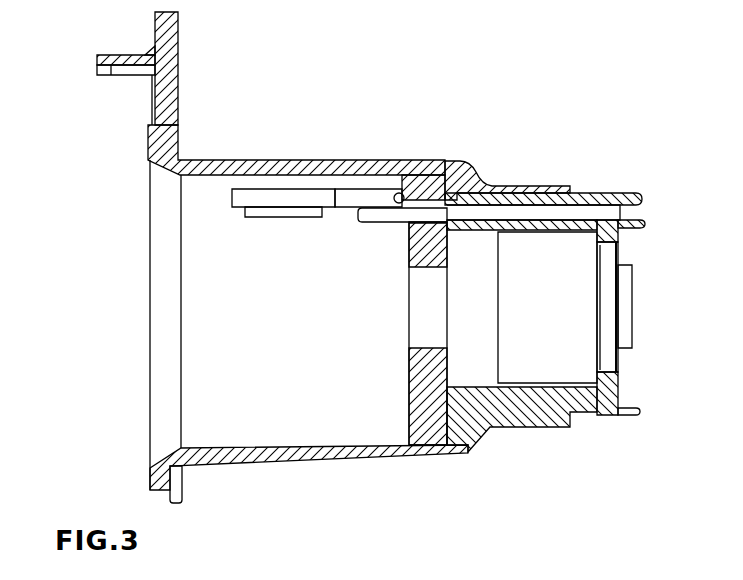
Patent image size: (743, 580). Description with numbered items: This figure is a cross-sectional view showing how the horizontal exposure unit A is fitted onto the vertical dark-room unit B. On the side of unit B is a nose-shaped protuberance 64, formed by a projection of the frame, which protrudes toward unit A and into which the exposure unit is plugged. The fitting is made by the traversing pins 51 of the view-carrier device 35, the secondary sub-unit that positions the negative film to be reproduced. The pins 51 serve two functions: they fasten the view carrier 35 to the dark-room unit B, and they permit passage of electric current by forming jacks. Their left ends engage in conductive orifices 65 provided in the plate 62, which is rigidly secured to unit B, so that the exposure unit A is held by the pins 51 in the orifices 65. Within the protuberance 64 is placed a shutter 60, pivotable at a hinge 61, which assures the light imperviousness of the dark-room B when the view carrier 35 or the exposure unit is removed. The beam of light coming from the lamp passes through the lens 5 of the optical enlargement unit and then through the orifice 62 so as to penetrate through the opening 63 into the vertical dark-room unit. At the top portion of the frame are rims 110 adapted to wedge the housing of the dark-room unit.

The rims 110 is at (178, 33).
The second unit B is at (170, 107).
The nose-shaped protuberance 64 is at (229, 172).
The shutter 60 is at (305, 197).
The hinge 61 is at (400, 193).
The conductive orifices 65 is at (447, 162).
The traversing pins 51 is at (590, 212).
The first unit A is at (630, 200).
The lens 5 is at (624, 299).
The opening 63 is at (165, 306).
The orifice 62 is at (418, 327).
The view-carrier device 35 is at (618, 417).